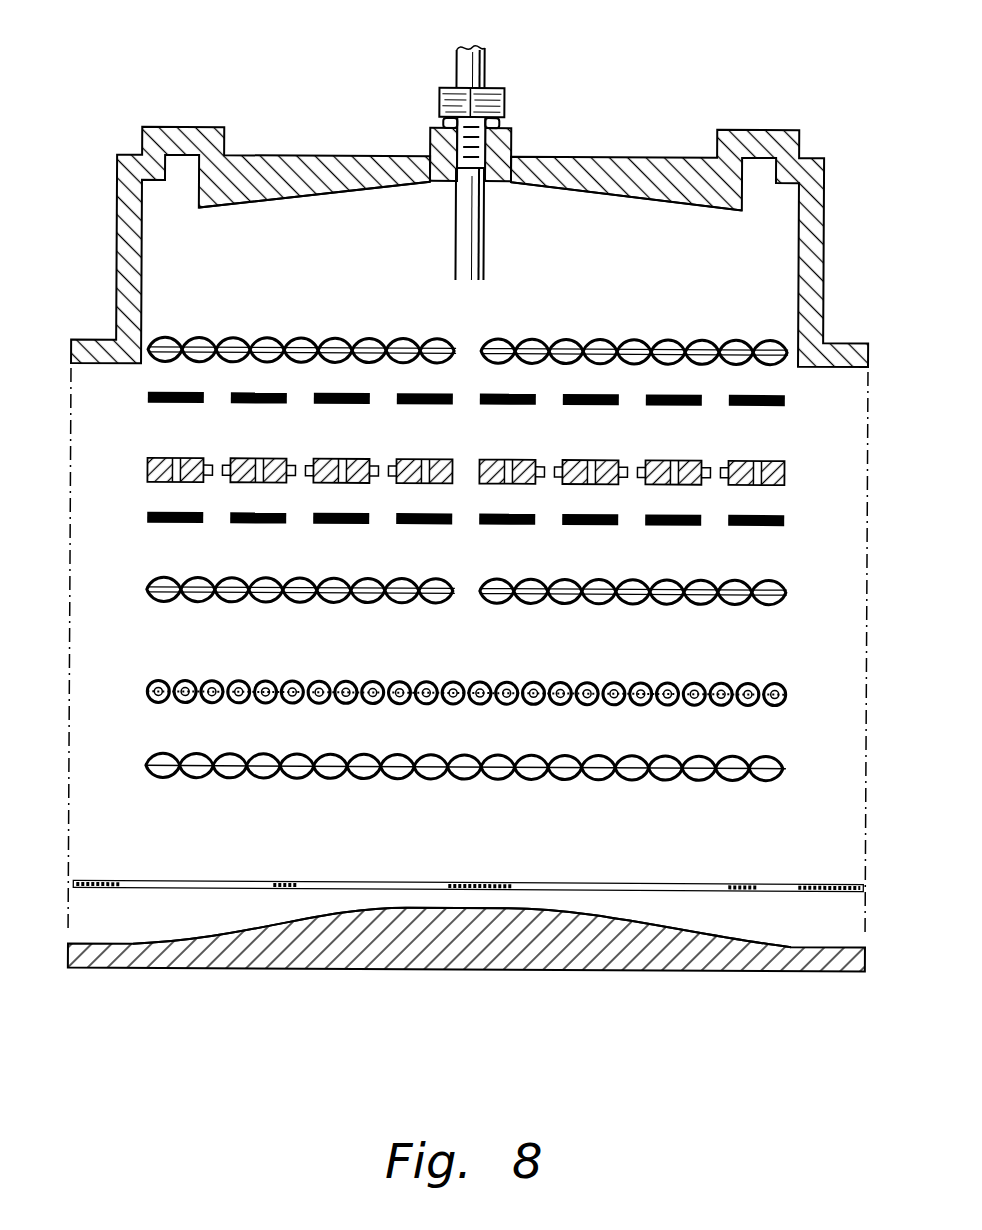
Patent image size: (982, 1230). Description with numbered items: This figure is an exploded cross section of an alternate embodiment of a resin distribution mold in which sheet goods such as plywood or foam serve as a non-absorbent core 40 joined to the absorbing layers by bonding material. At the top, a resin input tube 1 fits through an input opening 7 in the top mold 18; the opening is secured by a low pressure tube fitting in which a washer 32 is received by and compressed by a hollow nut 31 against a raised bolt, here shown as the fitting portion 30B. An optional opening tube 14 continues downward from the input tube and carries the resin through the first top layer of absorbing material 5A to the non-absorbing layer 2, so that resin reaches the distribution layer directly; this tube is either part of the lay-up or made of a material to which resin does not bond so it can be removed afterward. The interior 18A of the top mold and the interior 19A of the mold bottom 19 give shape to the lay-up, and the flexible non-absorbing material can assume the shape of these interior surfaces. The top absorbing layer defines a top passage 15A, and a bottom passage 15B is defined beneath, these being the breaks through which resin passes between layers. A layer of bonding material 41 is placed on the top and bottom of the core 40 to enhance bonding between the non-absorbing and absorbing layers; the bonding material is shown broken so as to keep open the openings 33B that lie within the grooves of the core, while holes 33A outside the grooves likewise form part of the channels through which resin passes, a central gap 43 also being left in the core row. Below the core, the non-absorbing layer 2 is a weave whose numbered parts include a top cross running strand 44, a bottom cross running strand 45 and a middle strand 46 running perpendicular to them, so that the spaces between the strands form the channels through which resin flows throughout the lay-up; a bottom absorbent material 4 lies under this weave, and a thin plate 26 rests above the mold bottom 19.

The resin input tube 1 is at (482, 72).
The hollow nut 31 is at (438, 100).
The washer 32 is at (500, 126).
The bearing collar 30B is at (512, 150).
The input opening 7 is at (455, 190).
The opening tube 14 is at (482, 237).
The top mold 18 is at (822, 188).
The interior of the top mold 18A is at (630, 201).
The top passage 15A is at (477, 325).
The first top layer of absorbing material 5A is at (626, 349).
The layer of bonding material 41 is at (788, 401).
The central gap in spacer row 43 is at (468, 448).
The openings within the grooves 33B is at (715, 470).
The holes outside the grooves 33A is at (760, 466).
The core 40 is at (506, 453).
The bottom passage 15B is at (472, 570).
The top cross running strand 44 is at (150, 683).
The middle strand 46 is at (163, 684).
The bottom cross running strand 45 is at (148, 697).
The non-absorbing layer 2 is at (467, 670).
The bottom absorbent material 4 is at (630, 776).
The bottom plate 26 is at (342, 881).
The interior of the mold bottom 19A is at (640, 924).
The mold bottom 19 is at (467, 957).